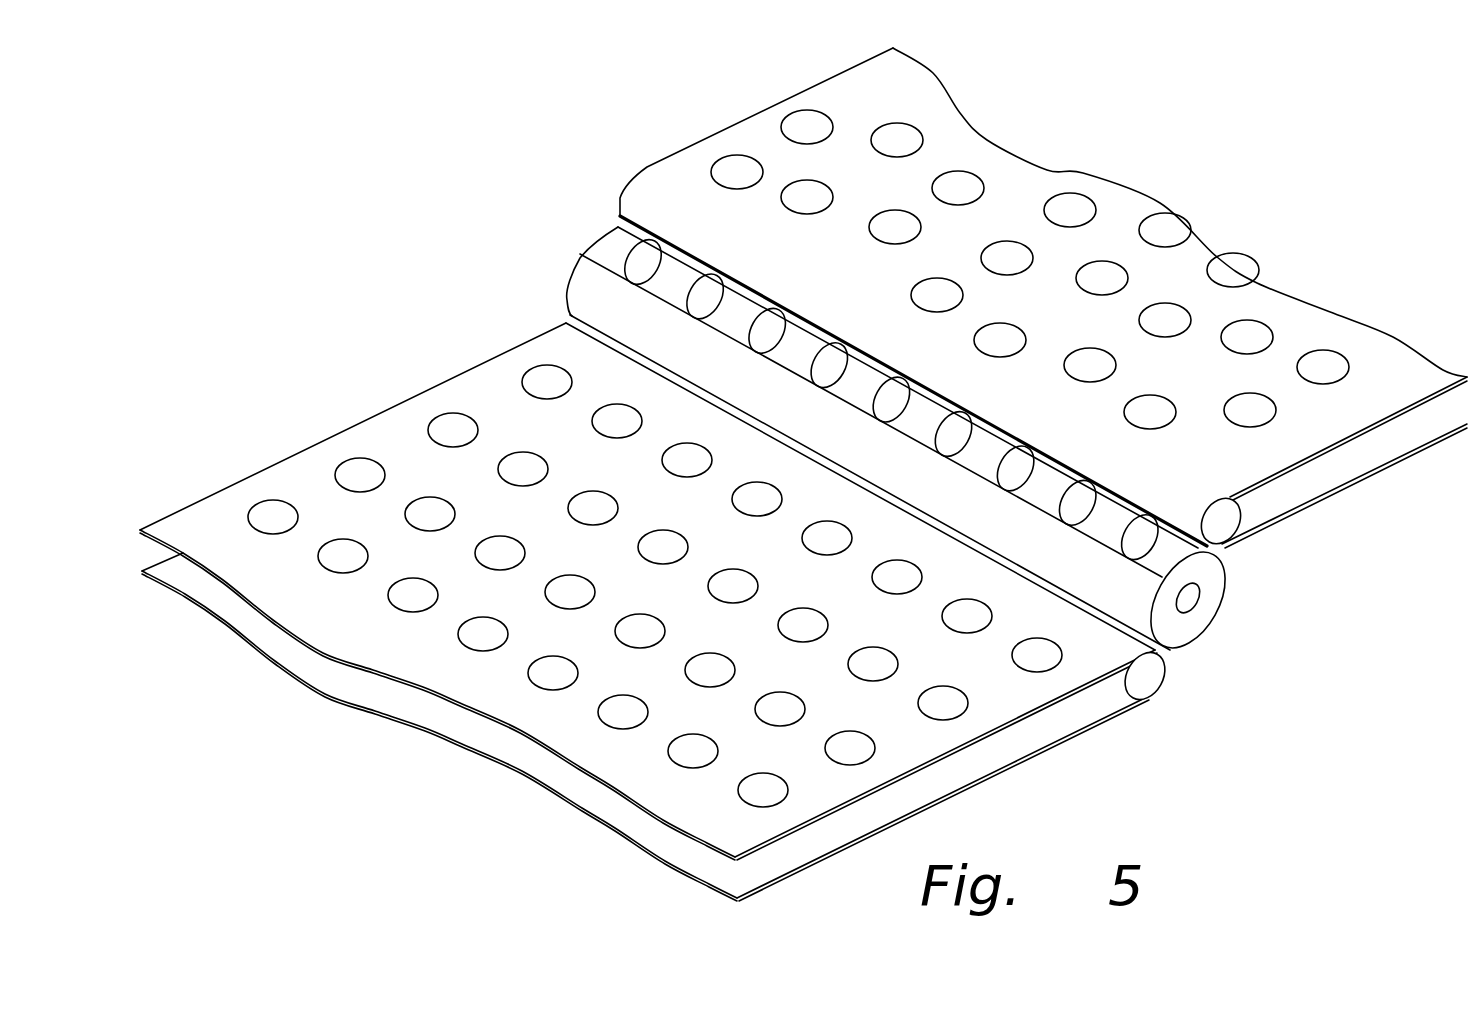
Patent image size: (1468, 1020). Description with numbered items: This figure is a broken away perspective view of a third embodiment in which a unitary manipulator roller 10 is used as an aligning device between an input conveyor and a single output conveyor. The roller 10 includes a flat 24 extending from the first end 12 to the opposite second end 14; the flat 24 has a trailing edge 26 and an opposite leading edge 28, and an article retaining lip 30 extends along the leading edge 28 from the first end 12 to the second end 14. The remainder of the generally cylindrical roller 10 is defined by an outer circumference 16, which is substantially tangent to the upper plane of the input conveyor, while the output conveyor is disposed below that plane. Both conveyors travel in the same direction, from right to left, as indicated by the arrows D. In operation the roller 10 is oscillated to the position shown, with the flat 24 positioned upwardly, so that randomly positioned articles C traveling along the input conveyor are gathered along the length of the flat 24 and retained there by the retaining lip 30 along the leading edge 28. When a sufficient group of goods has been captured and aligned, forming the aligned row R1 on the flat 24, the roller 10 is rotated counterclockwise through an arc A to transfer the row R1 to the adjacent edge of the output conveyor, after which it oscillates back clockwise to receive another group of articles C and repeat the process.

The manipulator roller 10 is at (490, 259).
The first end 12 is at (570, 296).
The second end 14 is at (1228, 570).
The outer circumference 16 is at (883, 467).
The flat 24 is at (866, 380).
The trailing edge 26 is at (808, 327).
The leading edge 28 is at (973, 467).
The article retaining lip 30 is at (797, 373).
The aligned row R1 is at (608, 242).
The articles C is at (932, 188).
The arrows indicating direction of travel D is at (1358, 412).
The arc A is at (1225, 620).